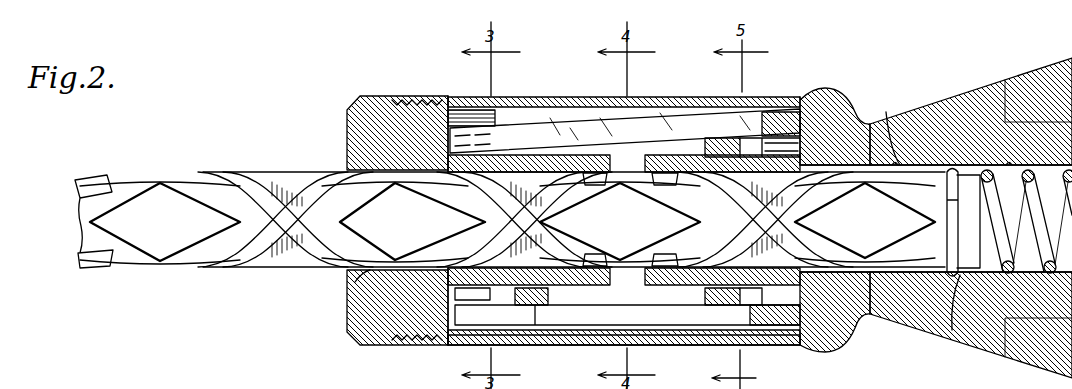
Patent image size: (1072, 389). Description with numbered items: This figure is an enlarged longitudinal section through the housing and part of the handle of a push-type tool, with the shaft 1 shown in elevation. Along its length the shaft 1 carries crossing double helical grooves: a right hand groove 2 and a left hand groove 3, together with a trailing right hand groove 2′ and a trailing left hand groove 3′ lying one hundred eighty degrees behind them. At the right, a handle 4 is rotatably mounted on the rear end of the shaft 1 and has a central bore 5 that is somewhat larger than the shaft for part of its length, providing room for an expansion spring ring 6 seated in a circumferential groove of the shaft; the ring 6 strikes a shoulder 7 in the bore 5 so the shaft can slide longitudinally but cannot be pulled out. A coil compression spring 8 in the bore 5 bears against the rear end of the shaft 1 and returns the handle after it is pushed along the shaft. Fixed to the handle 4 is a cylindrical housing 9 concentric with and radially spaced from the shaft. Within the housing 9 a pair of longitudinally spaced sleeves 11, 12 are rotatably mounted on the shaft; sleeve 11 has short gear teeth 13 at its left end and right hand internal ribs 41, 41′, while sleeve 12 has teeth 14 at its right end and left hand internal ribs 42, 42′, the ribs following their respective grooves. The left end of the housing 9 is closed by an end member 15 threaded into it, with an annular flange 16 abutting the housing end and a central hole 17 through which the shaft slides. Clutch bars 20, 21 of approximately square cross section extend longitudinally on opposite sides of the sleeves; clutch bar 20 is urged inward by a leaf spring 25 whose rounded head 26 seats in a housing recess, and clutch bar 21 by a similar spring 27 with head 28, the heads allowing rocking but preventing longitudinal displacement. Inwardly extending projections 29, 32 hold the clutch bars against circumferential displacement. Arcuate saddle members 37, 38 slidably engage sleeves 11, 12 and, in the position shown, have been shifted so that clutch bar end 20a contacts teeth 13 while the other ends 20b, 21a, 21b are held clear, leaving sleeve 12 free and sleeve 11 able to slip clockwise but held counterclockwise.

The shaft 1 is at (258, 172).
The helical groove 2 is at (205, 200).
The helical groove 3 is at (314, 200).
The trailing right hand groove 2′ is at (440, 196).
The trailing left hand groove 3′ is at (110, 192).
The handle 4 is at (926, 112).
The central bore 5 is at (1016, 165).
The expansion spring ring 6 is at (952, 165).
The shoulder 7 is at (898, 112).
The coil compression spring 8 is at (960, 330).
The cylindrical housing 9 is at (672, 100).
The sleeve 11 is at (560, 300).
The sleeve 12 is at (668, 325).
The gear teeth 13 is at (490, 300).
The gear teeth 14 is at (830, 160).
The end member 15 is at (380, 116).
The annular flange 16 is at (392, 98).
The central hole 17 is at (365, 278).
The clutch bar 20 is at (520, 130).
The clutch bar end 20a is at (462, 135).
The clutch bar end 20b is at (778, 120).
The clutch bar 21 is at (700, 300).
The clutch bar end 21a is at (470, 318).
The clutch bar end 21b is at (780, 325).
The leaf spring 25 is at (570, 116).
The head 26 is at (628, 112).
The leaf spring 27 is at (778, 346).
The head 28 is at (622, 290).
The projection 29 is at (488, 128).
The projection 32 is at (440, 322).
The saddle member 37 is at (745, 300).
The saddle member 38 is at (545, 325).
The internal rib 41 is at (597, 178).
The trailing internal rib 41′ is at (575, 235).
The internal rib 42 is at (663, 178).
The trailing internal rib 42′ is at (662, 262).